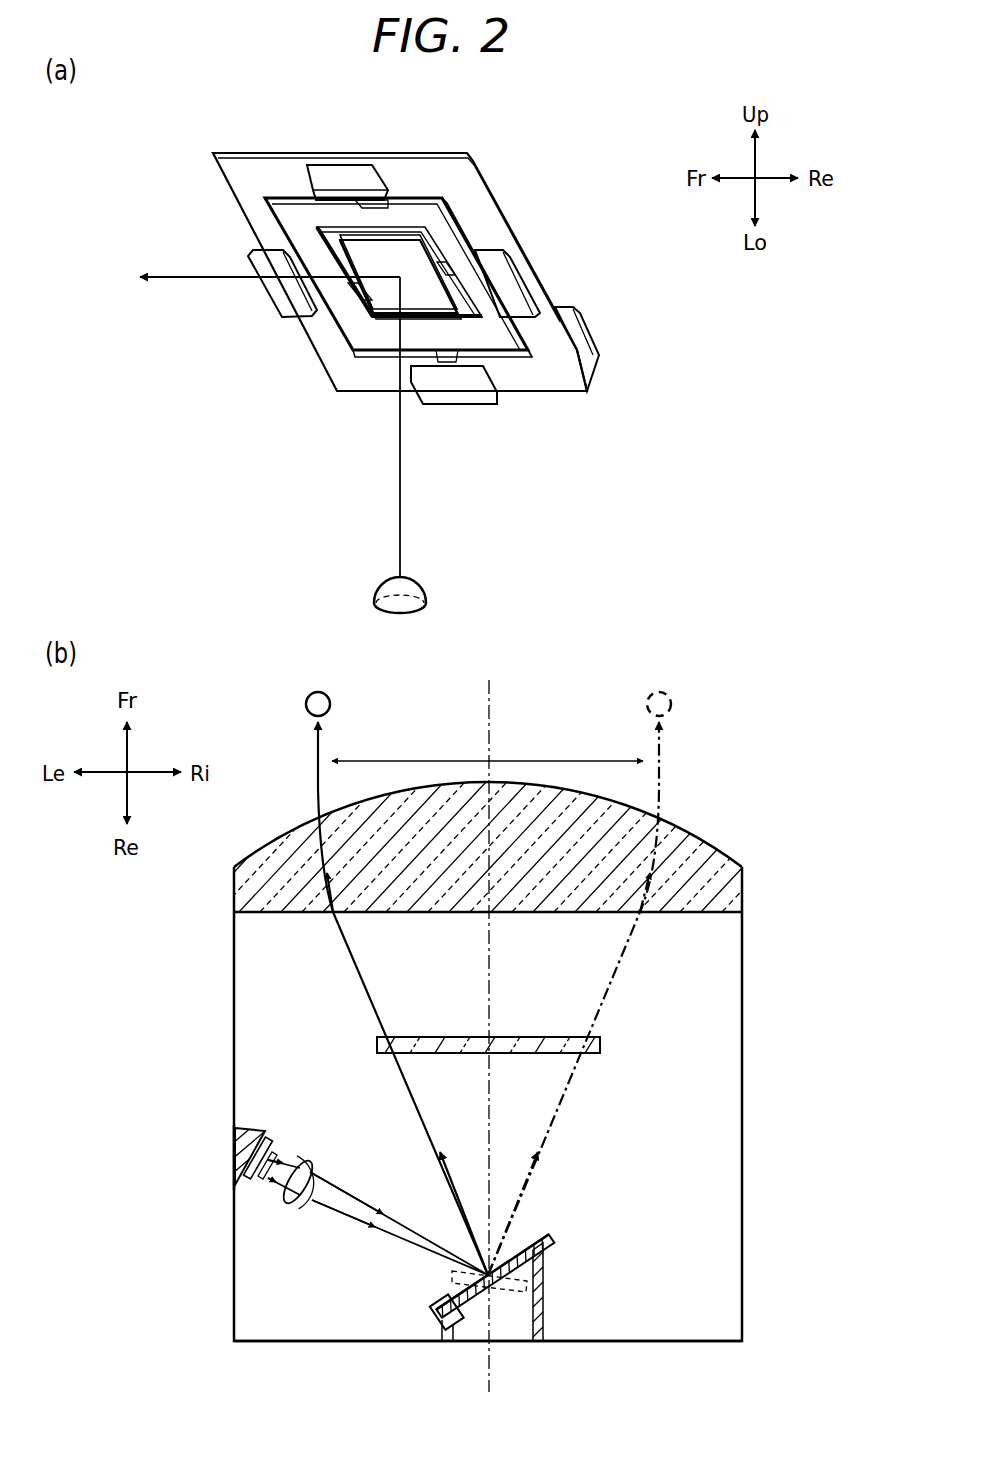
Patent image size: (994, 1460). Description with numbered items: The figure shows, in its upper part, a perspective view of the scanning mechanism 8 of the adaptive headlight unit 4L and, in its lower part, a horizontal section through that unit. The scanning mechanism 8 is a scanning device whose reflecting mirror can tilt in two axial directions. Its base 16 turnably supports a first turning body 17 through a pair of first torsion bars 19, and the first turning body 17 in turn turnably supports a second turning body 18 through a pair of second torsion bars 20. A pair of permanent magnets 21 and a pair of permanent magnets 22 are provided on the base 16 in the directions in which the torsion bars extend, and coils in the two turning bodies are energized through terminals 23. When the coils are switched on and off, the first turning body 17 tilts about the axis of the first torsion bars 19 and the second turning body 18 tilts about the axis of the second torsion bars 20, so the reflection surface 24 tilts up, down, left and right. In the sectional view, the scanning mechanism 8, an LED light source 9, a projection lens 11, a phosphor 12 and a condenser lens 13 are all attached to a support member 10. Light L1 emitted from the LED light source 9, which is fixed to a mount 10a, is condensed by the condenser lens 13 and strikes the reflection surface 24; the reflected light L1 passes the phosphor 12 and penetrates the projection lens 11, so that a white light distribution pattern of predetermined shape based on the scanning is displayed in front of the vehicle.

The scanning mechanism 8 is at (128, 112).
The LED light source 9 is at (423, 588).
The support member 10 is at (745, 1192).
The mount 10a is at (241, 1172).
The projection lens 11 is at (703, 857).
The phosphor 12 is at (375, 1042).
The condenser lens 13 is at (287, 1200).
The base 16 is at (230, 158).
The first turning body 17 is at (515, 324).
The second turning body 18 is at (408, 237).
The first torsion bars 19 is at (356, 202).
The second torsion bars 20 is at (348, 300).
The permanent magnets 21 is at (278, 292).
The permanent magnets 22 is at (318, 172).
The terminals 23 is at (596, 358).
The reflection surface 24 is at (398, 260).
The light L1 is at (403, 520).
The adaptive headlight unit 4L is at (198, 922).